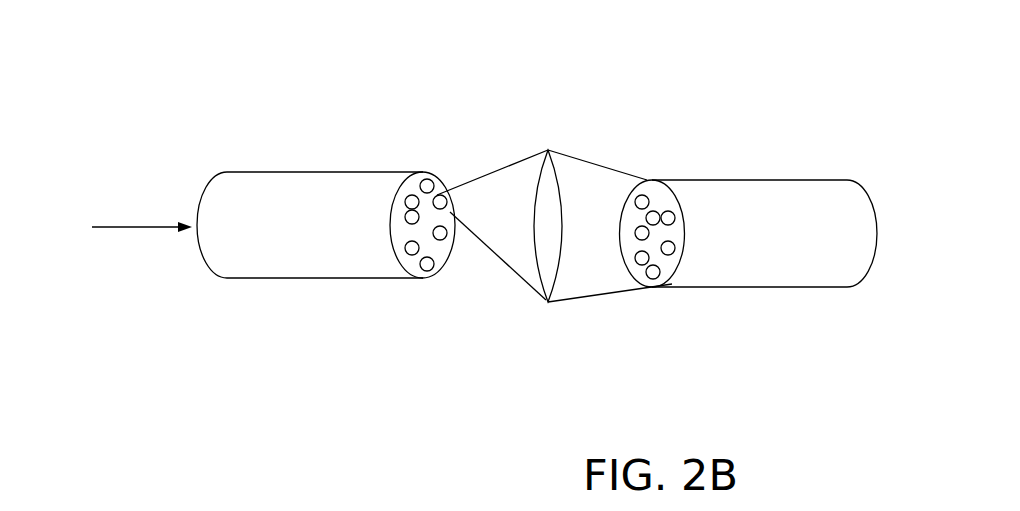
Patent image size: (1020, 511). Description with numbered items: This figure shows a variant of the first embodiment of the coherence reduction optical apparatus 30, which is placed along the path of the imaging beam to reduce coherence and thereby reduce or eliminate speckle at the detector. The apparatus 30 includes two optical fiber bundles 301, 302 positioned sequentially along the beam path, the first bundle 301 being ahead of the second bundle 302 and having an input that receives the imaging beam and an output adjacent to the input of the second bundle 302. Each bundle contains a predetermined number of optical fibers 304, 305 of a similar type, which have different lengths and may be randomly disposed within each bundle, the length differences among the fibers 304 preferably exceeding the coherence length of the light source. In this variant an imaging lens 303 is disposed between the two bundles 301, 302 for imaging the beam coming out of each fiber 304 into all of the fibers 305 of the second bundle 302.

The coherence reduction optical apparatus 30 is at (660, 126).
The first optical fiber bundle 301 is at (247, 272).
The second optical fiber bundle 302 is at (733, 287).
The imaging lens 303 is at (548, 302).
The optical fibers of first bundle 304 is at (447, 243).
The optical fibers of second bundle 305 is at (633, 230).